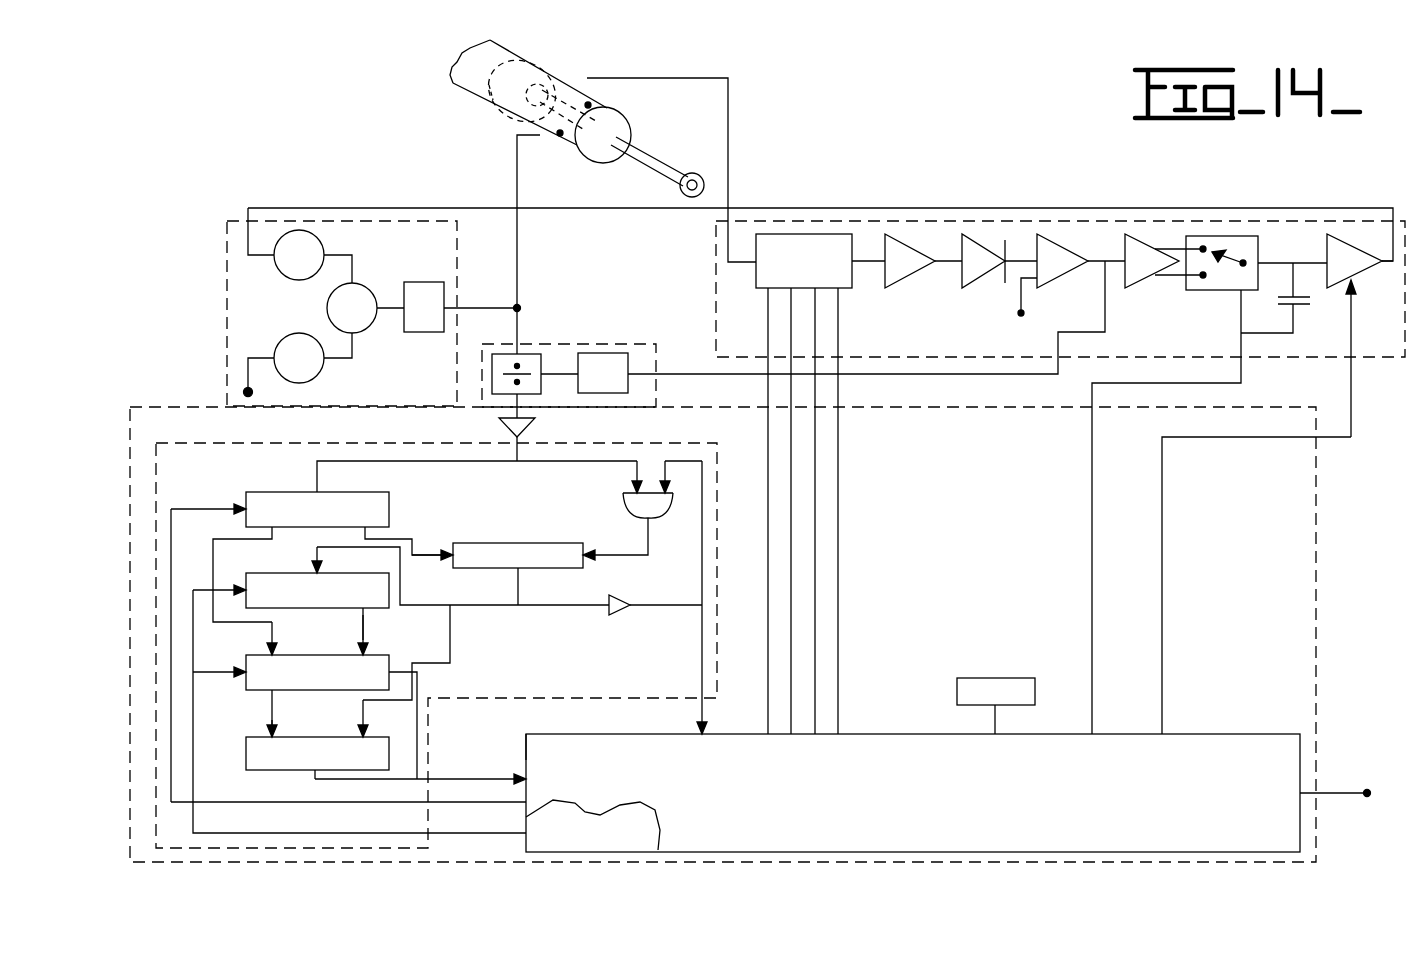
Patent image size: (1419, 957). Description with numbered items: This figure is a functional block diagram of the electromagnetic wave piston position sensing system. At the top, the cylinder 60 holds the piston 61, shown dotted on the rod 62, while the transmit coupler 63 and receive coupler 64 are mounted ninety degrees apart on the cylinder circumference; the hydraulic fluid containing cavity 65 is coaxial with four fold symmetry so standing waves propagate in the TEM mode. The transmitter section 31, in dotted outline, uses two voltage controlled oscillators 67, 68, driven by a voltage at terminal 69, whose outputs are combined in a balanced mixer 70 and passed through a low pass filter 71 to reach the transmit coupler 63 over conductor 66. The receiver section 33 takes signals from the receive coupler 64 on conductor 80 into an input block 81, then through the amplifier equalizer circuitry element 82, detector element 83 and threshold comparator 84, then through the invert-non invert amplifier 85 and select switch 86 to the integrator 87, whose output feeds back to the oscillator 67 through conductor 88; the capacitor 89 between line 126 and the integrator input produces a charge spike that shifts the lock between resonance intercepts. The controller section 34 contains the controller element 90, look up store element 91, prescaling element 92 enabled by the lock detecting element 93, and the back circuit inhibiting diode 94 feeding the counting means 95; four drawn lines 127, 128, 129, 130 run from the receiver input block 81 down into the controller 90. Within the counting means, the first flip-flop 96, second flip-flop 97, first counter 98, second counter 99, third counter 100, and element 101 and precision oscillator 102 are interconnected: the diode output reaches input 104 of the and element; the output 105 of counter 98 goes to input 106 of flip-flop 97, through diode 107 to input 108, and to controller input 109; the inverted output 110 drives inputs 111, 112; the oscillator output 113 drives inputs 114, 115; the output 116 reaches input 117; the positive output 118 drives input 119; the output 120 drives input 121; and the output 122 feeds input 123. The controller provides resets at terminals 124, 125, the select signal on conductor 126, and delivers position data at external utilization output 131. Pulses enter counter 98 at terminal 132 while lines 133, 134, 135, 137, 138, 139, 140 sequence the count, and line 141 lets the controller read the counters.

The transmitter section 31 is at (227, 255).
The receiver section 33 is at (716, 265).
The controller section 34 is at (1316, 620).
The cylinder 60 is at (470, 66).
The piston 61 is at (493, 101).
The rod 62 is at (660, 160).
The transmit coupler 63 is at (560, 136).
The receive coupler 64 is at (604, 108).
The hydraulic fluid containing cavity 65 is at (588, 103).
The conductor 66 is at (517, 194).
The voltage controlled oscillator 67 is at (324, 248).
The voltage controlled oscillator 68 is at (295, 333).
The terminal 69 is at (246, 391).
The balanced mixer 70 is at (328, 310).
The low pass filter 71 is at (422, 333).
The conductor 80 is at (728, 135).
The sensing circuit 81 is at (756, 280).
The amplifier equalizer circuitry element 82 is at (925, 285).
The detector element 83 is at (995, 283).
The threshold comparator 84 is at (1080, 283).
The invert-non invert amplifier 85 is at (1155, 288).
The select switch 86 is at (1222, 290).
The integrator 87 is at (1365, 280).
The conductor 88 is at (945, 208).
The capacitor 89 is at (1290, 305).
The controller element 90 is at (1290, 770).
The look up store element 91 is at (992, 678).
The prescaling element 92 is at (530, 394).
The lock detecting element 93 is at (610, 393).
The back circuit inhibiting diode 94 is at (500, 432).
The counting means 95 is at (717, 605).
The first flip-flop 96 is at (317, 509).
The second flip-flop 97 is at (317, 590).
The first counter 98 is at (535, 543).
The second counter 99 is at (317, 672).
The third counter 100 is at (317, 753).
The and element 101 is at (637, 512).
The precision oscillator 102 is at (580, 815).
The input 104 is at (632, 491).
The output 105 is at (320, 478).
The input 106 is at (322, 570).
The back circuit inhibiting diode 107 is at (620, 616).
The input 108 is at (674, 495).
The input 109 is at (700, 728).
The inverted output 110 is at (392, 537).
The input 111 is at (455, 568).
The input 112 is at (368, 735).
The output 113 is at (520, 833).
The input 114 is at (244, 678).
The input 115 is at (244, 598).
The output 116 is at (313, 776).
The input 117 is at (525, 748).
The positive output 118 is at (240, 515).
The input 119 is at (278, 653).
The output 120 is at (368, 612).
The input 121 is at (372, 648).
The output 122 is at (275, 694).
The input 123 is at (268, 738).
The terminal 124 is at (500, 779).
The terminal 125 is at (1162, 725).
The conductor 126 is at (1092, 725).
The signal line 127 is at (768, 738).
The signal line 128 is at (791, 740).
The signal line 129 is at (815, 740).
The signal line 130 is at (838, 740).
The external utilization output 131 is at (1344, 812).
The terminal 132 is at (590, 560).
The line 133 is at (197, 508).
The line 134 is at (214, 570).
The line 135 is at (450, 668).
The line 137 is at (300, 802).
The line 138 is at (462, 606).
The line 139 is at (356, 620).
The line 140 is at (686, 606).
The line 141 is at (420, 778).